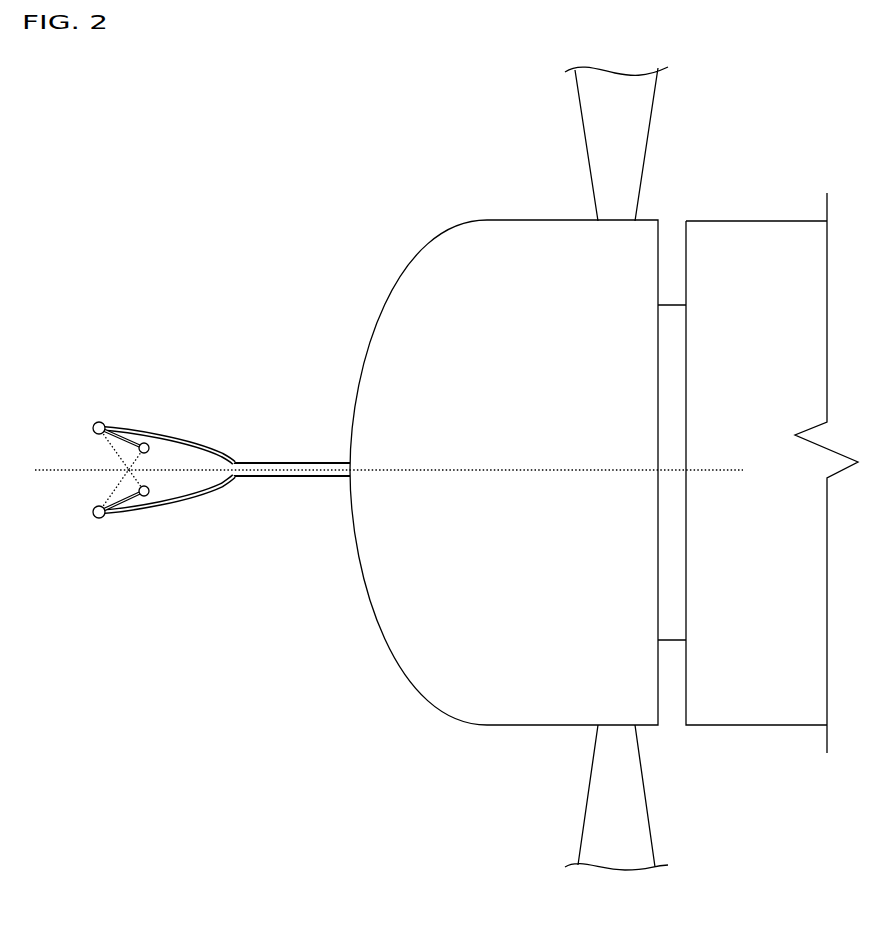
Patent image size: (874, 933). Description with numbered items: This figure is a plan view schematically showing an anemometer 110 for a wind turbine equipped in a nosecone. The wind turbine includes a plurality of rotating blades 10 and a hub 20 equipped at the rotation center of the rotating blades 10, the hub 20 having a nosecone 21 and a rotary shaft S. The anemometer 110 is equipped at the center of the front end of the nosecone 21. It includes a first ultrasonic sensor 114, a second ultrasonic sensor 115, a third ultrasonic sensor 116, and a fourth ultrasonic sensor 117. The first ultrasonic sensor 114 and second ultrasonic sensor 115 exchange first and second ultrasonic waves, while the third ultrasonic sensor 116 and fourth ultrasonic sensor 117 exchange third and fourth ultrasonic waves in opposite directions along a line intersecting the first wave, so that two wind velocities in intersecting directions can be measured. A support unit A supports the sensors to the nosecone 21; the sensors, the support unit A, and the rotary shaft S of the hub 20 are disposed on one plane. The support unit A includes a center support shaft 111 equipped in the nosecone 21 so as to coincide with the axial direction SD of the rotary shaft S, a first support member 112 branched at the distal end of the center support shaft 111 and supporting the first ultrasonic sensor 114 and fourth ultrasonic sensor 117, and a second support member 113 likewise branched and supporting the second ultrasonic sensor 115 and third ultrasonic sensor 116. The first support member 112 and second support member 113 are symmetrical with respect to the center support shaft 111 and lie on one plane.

The rotating blade 10 is at (603, 105).
The hub 20 is at (545, 514).
The nosecone 21 is at (390, 653).
The anemometer 110 is at (220, 446).
The center support shaft 111 is at (295, 463).
The first support member 112 is at (204, 441).
The second support member 113 is at (204, 498).
The first ultrasonic sensor 114 is at (101, 420).
The second ultrasonic sensor 115 is at (148, 495).
The third ultrasonic sensor 116 is at (100, 520).
The fourth ultrasonic sensor 117 is at (148, 444).
The support unit A is at (307, 350).
The rotary shaft S is at (668, 633).
The axial direction SD is at (56, 478).